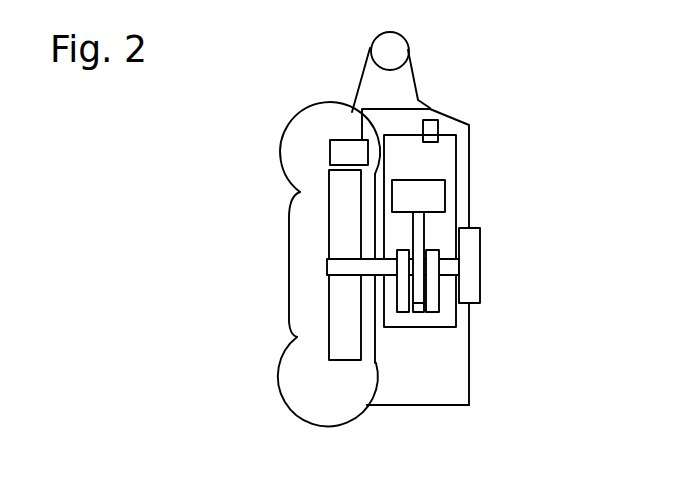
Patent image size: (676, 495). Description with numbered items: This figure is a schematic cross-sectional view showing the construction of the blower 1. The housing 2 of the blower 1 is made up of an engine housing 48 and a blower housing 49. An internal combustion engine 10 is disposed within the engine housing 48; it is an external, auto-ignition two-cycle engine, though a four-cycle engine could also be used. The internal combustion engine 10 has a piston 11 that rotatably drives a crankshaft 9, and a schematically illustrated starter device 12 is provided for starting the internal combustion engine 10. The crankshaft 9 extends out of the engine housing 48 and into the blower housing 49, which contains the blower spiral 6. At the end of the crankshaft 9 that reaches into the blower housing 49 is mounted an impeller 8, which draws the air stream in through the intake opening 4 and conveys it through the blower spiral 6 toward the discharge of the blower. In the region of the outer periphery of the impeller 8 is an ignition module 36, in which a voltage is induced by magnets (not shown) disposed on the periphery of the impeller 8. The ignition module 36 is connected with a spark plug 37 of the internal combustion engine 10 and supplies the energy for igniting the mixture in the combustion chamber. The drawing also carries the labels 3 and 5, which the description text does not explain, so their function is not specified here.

The spray device 1 is at (537, 69).
The housing 2 is at (470, 375).
The hanging eyelet 3 is at (395, 48).
The actuating arm assembly 4 is at (284, 303).
The actuating arm 5 is at (288, 243).
The upper knob 6 is at (300, 115).
The actuating element 8 is at (339, 190).
The spring 9 is at (448, 263).
The drive unit 10 is at (461, 179).
The motor 11 is at (433, 198).
The switch 12 is at (470, 273).
The sensor 36 is at (342, 153).
The control element 37 is at (432, 128).
The housing bottom 48 is at (397, 407).
The lower knob 49 is at (292, 410).